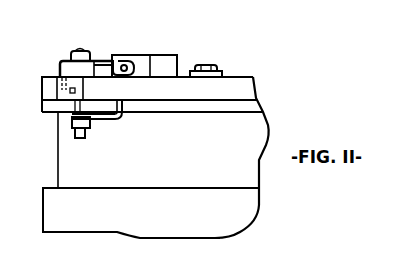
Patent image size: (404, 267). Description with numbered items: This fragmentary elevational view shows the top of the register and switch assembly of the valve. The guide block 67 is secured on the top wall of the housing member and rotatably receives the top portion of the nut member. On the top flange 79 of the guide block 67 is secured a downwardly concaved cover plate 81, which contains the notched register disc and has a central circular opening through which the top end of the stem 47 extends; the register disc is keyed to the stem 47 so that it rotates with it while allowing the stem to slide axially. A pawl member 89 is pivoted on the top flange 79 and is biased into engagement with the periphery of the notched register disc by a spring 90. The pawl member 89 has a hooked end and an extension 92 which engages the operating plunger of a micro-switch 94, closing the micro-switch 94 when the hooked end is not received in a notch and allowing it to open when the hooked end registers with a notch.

The stem 47 is at (210, 64).
The guide block 67 is at (58, 170).
The top flange 79 is at (250, 105).
The cover plate 81 is at (242, 88).
The pawl member 89 is at (60, 95).
The spring 90 is at (108, 122).
The extension 92 is at (118, 60).
The micro-switch 94 is at (148, 57).